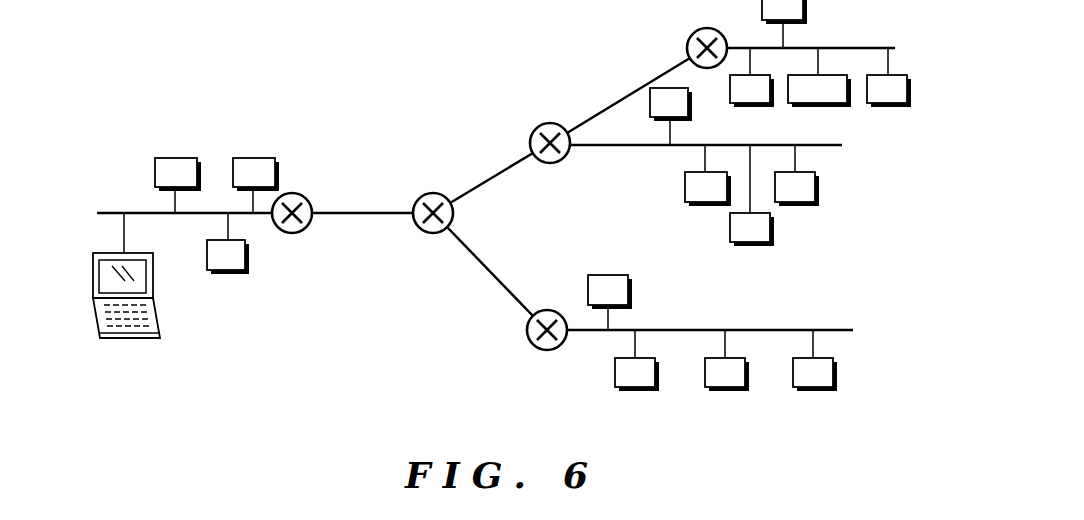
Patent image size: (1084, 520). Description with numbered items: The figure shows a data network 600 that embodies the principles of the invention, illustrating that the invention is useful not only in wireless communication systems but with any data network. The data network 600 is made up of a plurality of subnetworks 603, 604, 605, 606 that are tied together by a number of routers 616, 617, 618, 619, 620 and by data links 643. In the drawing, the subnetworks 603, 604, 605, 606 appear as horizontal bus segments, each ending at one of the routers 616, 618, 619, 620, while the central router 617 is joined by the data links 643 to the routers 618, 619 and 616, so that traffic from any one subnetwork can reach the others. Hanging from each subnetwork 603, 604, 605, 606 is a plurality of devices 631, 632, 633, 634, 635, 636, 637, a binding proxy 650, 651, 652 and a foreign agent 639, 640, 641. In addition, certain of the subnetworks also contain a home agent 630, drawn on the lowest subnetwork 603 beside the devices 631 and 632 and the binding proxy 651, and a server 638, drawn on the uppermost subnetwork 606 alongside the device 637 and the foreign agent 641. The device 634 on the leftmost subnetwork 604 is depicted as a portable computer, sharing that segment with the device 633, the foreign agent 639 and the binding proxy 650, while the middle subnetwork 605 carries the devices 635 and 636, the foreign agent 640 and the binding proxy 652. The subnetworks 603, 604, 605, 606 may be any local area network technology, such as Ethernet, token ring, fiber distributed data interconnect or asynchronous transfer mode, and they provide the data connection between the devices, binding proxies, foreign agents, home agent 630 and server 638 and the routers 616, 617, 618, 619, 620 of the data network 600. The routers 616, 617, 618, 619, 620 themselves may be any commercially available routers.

The data network 600 is at (376, 430).
The subnetwork 603 is at (856, 317).
The subnetwork 604 is at (100, 213).
The subnetwork 605 is at (827, 148).
The subnetwork 606 is at (876, 47).
The router 616 is at (528, 340).
The router 617 is at (418, 226).
The router 618 is at (297, 233).
The router 619 is at (531, 139).
The router 620 is at (690, 40).
The home agent 630 is at (818, 390).
The device 631 is at (727, 390).
The device 632 is at (640, 390).
The device 633 is at (232, 274).
The device 634 is at (147, 339).
The device 635 is at (702, 206).
The device 636 is at (800, 206).
The device 637 is at (760, 73).
The server 638 is at (828, 73).
The foreign agent 639 is at (179, 158).
The foreign agent 640 is at (755, 245).
The foreign agent 641 is at (889, 73).
The data link 643 is at (343, 211).
The binding proxy 650 is at (257, 158).
The binding proxy 651 is at (628, 306).
The binding proxy 652 is at (688, 117).